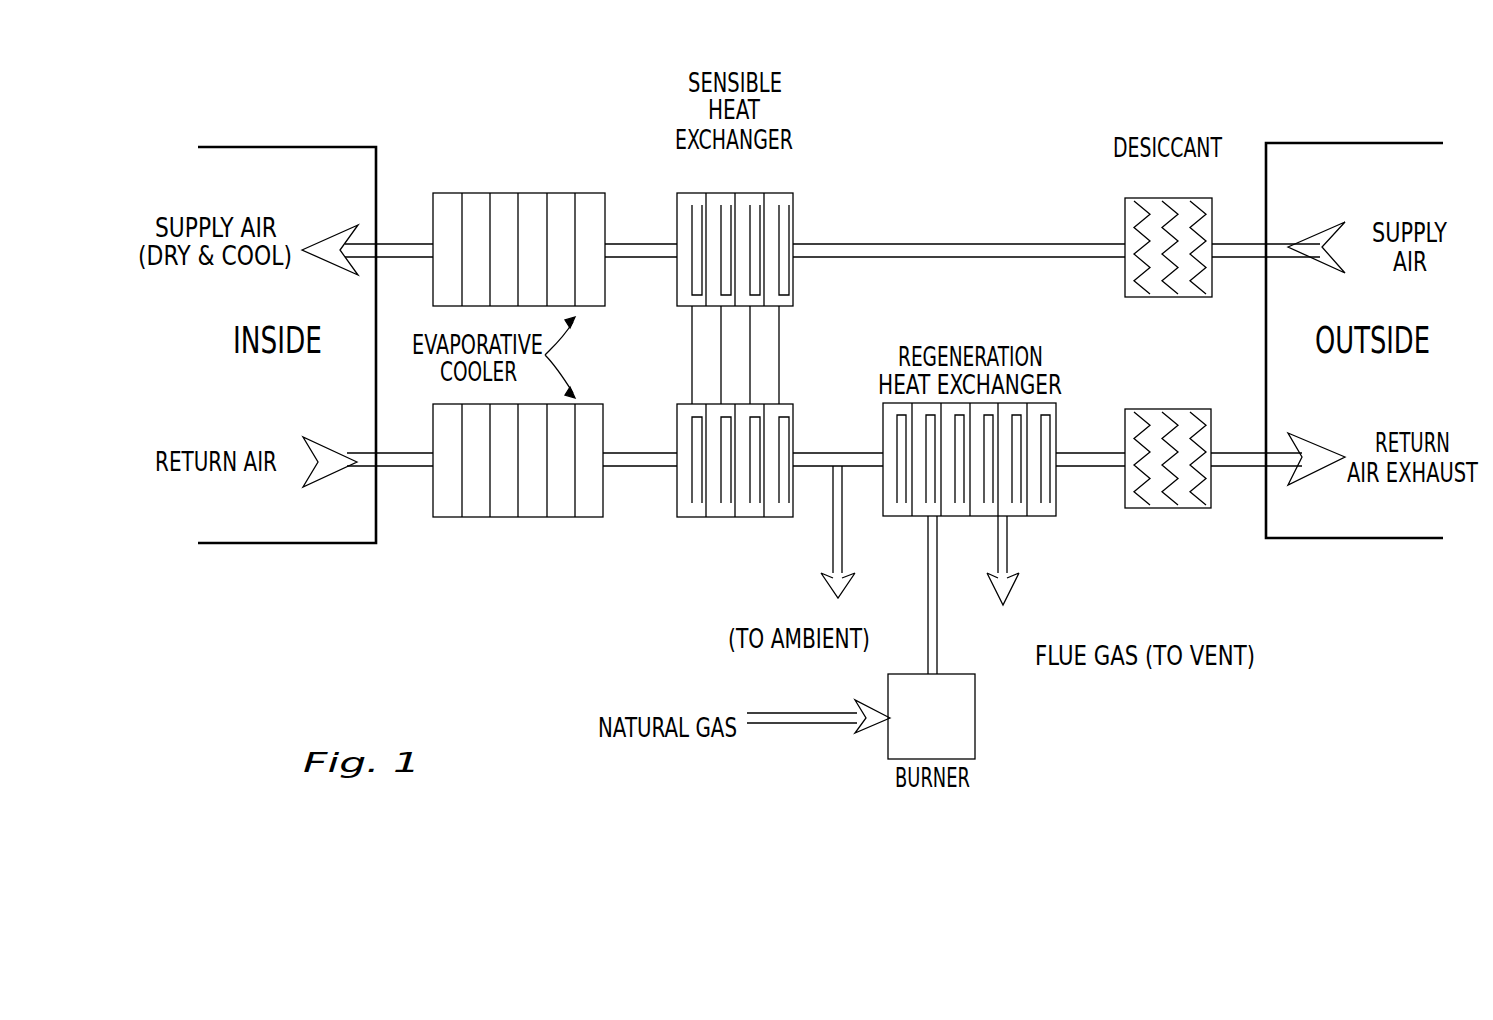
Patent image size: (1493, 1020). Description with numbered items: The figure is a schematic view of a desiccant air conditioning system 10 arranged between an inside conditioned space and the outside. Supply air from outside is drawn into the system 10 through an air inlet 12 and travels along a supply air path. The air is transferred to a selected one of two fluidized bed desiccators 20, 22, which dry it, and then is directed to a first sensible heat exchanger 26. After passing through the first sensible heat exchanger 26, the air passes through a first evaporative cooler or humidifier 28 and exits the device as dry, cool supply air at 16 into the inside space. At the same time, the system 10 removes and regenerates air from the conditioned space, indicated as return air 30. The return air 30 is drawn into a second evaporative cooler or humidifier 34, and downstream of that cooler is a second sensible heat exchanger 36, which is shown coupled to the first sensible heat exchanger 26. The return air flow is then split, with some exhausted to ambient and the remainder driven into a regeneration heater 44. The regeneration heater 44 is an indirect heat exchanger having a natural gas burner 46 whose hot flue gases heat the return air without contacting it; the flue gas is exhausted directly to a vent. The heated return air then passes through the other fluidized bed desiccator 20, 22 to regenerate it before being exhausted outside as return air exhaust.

The air conditioning system 10 is at (953, 141).
The air inlet 12 is at (1316, 233).
The supply air exit 16 is at (333, 232).
The fluidized bed desiccator 20 is at (1132, 219).
The fluidized bed desiccator 22 is at (1200, 502).
The first sensible heat exchanger 26 is at (780, 222).
The first evaporative cooler 28 is at (477, 223).
The return air 30 is at (332, 478).
The second evaporative cooler 34 is at (503, 508).
The second sensible heat exchanger 36 is at (695, 507).
The regeneration heater 44 is at (1030, 503).
The natural gas burner 46 is at (967, 718).